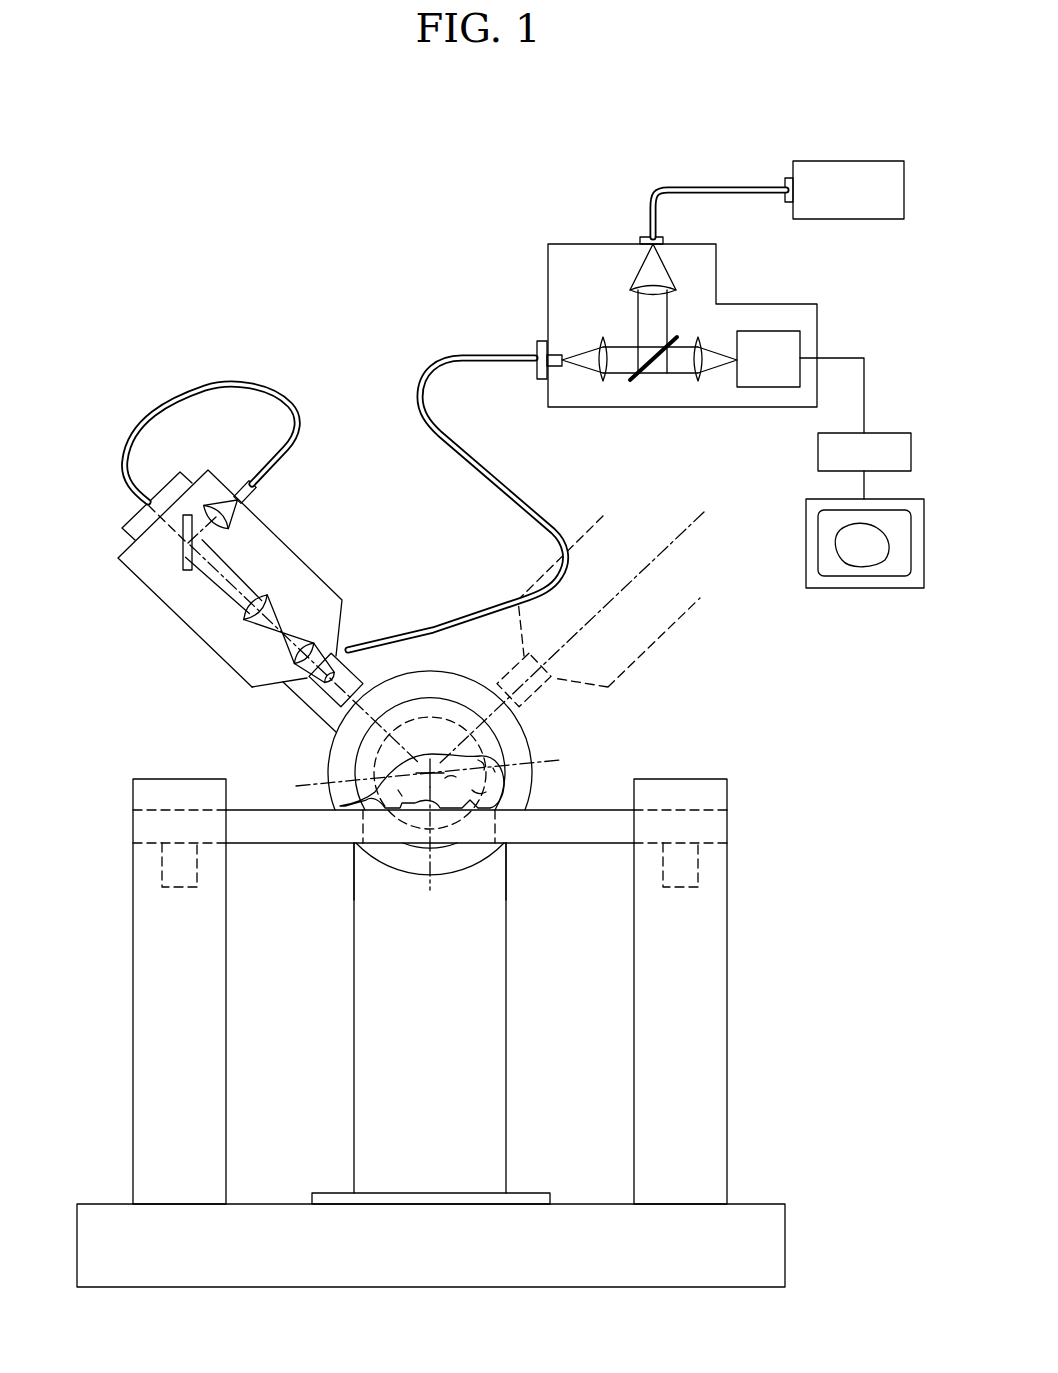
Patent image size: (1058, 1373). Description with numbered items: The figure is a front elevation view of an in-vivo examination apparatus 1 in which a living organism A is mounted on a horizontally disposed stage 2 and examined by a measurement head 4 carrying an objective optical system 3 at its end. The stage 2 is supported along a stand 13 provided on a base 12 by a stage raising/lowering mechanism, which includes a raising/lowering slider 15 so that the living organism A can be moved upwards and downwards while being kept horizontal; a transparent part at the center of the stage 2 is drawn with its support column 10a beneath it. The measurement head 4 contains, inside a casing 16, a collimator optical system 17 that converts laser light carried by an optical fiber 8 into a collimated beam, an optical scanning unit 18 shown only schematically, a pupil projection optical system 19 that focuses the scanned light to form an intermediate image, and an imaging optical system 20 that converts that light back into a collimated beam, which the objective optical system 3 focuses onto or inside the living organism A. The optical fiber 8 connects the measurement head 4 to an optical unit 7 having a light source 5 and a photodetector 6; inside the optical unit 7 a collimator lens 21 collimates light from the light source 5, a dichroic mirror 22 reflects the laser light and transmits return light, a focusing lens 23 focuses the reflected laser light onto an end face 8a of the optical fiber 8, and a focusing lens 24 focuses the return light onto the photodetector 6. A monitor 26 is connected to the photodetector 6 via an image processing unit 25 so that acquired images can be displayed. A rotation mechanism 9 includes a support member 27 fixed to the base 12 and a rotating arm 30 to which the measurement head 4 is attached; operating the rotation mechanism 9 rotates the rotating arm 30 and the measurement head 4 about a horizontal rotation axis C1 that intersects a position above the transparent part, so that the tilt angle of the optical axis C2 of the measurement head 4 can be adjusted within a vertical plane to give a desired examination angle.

The in-vivo examination apparatus 1 is at (170, 361).
The stage 2 is at (545, 830).
The objective optical system 3 is at (356, 672).
The measurement head 4 is at (419, 617).
The light source 5 is at (860, 205).
The photodetector 6 is at (780, 331).
The optical unit 7 is at (652, 282).
The optical fiber 8 is at (416, 384).
The end face 8a is at (546, 350).
The rotation mechanism 9 is at (278, 758).
The support column 10a is at (353, 845).
The base 12 is at (775, 1236).
The stand 13 is at (148, 974).
The raising/lowering slider 15 is at (162, 862).
The casing 16 is at (314, 568).
The collimator optical system 17 is at (233, 515).
The optical scanning unit 18 is at (180, 558).
The pupil projection optical system 19 is at (250, 612).
The imaging optical system 20 is at (288, 660).
The collimator lens 21 is at (636, 286).
The dichroic mirror 22 is at (642, 386).
The focusing lens 23 is at (601, 382).
The focusing lens 24 is at (702, 382).
The image processing unit 25 is at (884, 432).
The monitor 26 is at (880, 590).
The support member 27 is at (480, 1046).
The rotating arm 30 is at (296, 708).
The living organism A is at (485, 760).
The rotation axis C1 is at (430, 855).
The optical axis C2 is at (411, 784).